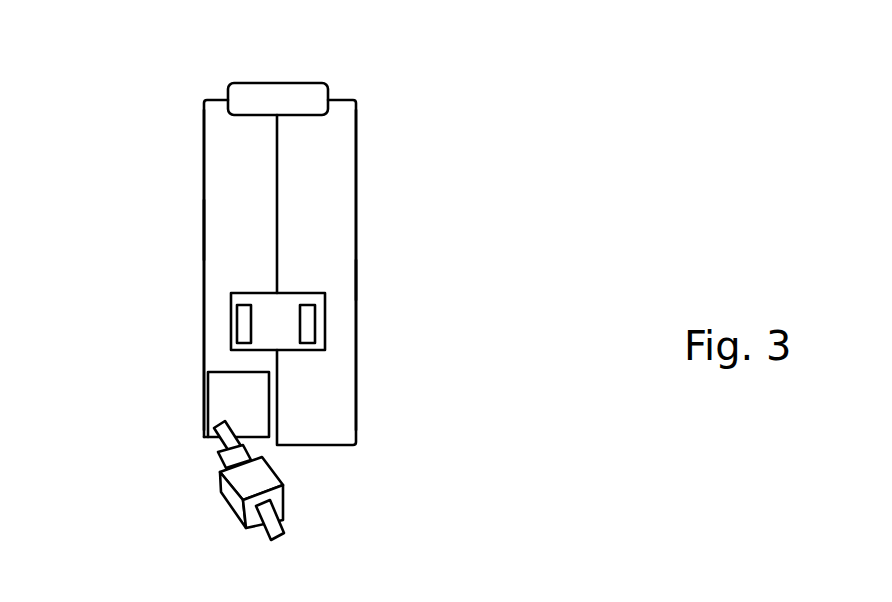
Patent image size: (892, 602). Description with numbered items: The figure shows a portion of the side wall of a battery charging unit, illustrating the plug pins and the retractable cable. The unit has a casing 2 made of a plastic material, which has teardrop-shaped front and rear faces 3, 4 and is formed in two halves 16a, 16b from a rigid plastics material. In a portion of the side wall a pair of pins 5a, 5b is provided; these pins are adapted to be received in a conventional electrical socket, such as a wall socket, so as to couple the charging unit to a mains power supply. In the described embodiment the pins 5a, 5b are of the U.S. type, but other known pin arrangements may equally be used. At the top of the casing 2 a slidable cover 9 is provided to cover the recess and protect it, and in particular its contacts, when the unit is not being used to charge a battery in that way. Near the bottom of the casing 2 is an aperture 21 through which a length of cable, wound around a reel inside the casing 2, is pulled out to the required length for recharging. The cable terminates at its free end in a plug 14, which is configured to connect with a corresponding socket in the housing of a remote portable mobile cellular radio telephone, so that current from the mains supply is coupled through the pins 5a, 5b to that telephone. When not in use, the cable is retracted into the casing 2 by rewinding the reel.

The casing 2 is at (330, 418).
The front face 3 is at (357, 287).
The rear face 4 is at (204, 228).
The pin 5a is at (308, 328).
The pin 5b is at (238, 325).
The slidable cover 9 is at (293, 100).
The plug 14 is at (283, 500).
The casing half 16a is at (337, 207).
The casing half 16b is at (228, 152).
The aperture 21 is at (228, 396).